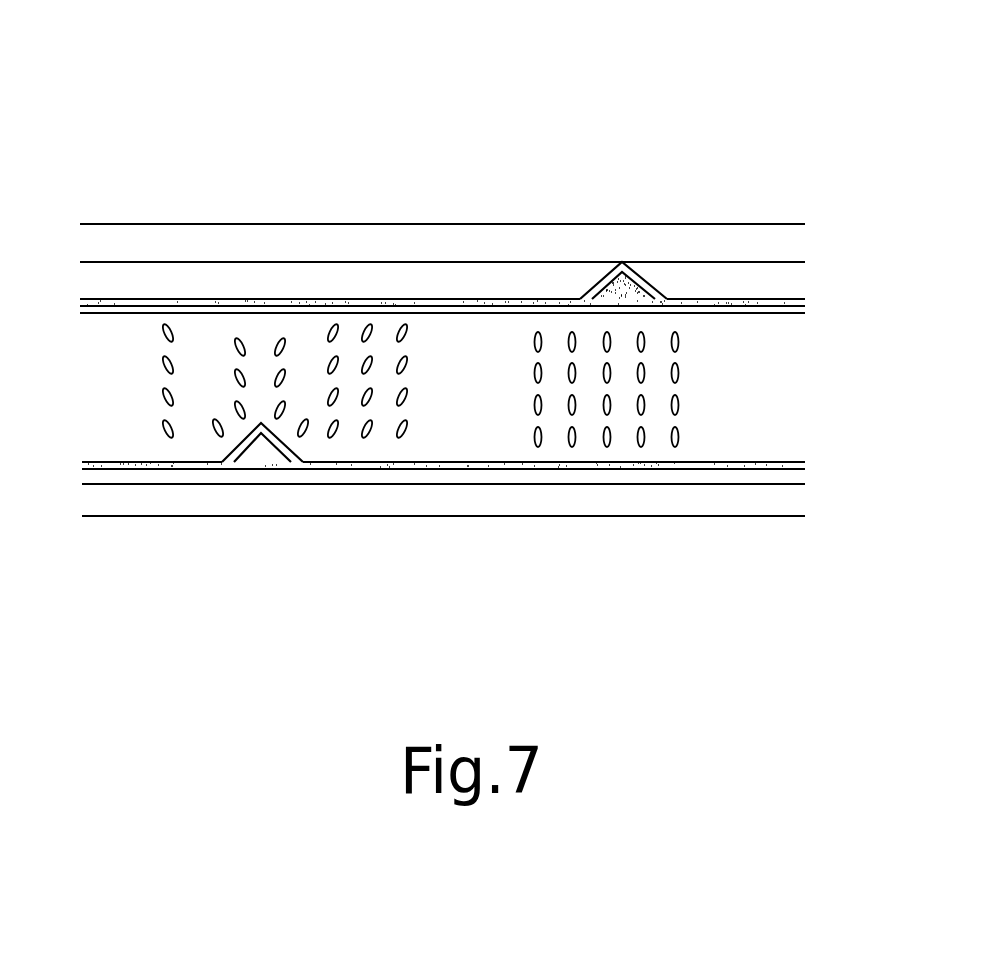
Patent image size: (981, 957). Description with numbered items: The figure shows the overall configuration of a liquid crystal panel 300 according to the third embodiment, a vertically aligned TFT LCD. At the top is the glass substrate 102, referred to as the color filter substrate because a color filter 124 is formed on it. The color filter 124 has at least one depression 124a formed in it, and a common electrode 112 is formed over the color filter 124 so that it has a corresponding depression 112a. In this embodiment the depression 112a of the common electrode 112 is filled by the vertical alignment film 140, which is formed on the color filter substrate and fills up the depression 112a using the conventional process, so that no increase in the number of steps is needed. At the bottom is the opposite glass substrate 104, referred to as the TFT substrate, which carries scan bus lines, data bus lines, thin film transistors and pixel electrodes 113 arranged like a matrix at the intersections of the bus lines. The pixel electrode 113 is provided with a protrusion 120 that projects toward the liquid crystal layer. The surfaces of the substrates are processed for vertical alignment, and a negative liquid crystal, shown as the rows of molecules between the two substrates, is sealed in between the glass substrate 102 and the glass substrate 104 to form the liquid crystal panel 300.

The liquid crystal panel 300 is at (176, 142).
The glass substrate 102 is at (243, 227).
The color filter 124 is at (332, 277).
The common electrode 112 is at (770, 300).
The depression 112a is at (600, 293).
The depression 124a is at (665, 283).
The vertical alignment film 140 is at (728, 312).
The protrusion 120 is at (258, 452).
The pixel electrode 113 is at (745, 478).
The glass substrate 104 is at (508, 505).